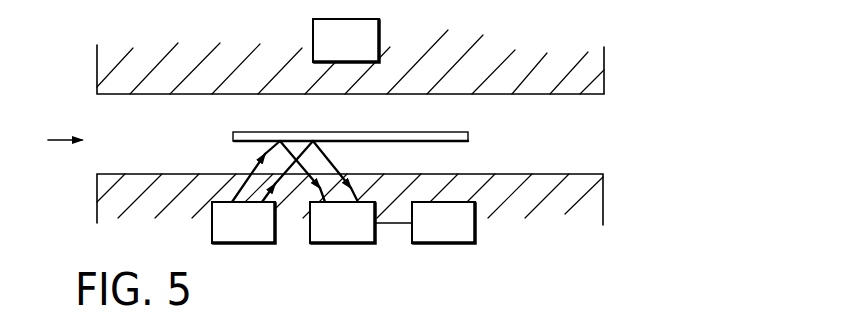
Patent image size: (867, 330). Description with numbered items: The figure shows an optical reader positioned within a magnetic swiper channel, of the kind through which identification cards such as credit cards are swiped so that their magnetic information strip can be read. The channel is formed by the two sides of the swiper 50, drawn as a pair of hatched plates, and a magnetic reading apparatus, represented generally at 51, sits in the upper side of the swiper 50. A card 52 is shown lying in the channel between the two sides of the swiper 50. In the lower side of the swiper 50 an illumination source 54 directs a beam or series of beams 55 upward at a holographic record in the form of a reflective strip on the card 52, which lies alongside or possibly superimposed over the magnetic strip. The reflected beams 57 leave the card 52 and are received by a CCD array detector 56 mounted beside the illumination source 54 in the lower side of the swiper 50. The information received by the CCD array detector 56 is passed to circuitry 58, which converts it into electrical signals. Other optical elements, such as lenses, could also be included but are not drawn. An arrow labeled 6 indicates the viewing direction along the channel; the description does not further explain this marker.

The viewing direction arrow 6 is at (55, 140).
The swiper 50 is at (605, 90).
The magnetic reading apparatus 51 is at (380, 43).
The card 52 is at (469, 140).
The illumination source 54 is at (253, 243).
The beams 55 is at (237, 189).
The CCD array detector 56 is at (340, 243).
The reflected beams 57 is at (345, 178).
The circuitry 58 is at (433, 243).